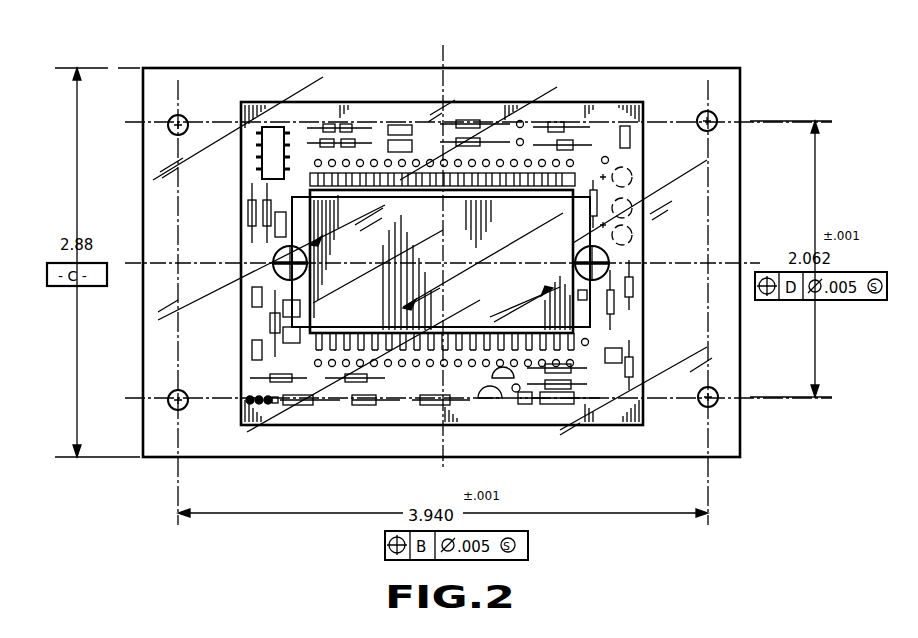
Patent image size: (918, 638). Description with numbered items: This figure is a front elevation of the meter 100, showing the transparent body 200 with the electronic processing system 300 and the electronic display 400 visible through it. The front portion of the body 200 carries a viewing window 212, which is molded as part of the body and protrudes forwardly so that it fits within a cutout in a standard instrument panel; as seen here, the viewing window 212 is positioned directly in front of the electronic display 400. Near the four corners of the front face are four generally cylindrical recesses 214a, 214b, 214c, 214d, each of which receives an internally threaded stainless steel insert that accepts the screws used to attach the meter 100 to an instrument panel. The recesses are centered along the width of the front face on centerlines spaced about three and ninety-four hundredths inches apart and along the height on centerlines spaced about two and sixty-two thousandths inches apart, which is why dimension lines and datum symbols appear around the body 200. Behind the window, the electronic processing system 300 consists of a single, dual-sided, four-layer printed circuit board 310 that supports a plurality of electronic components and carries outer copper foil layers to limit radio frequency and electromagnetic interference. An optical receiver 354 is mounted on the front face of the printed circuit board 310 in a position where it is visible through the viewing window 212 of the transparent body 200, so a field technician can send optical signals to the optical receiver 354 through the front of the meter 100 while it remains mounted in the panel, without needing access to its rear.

The meter 100 is at (52, 158).
The transparent body 200 is at (740, 150).
The viewing window 212 is at (593, 318).
The generally cylindrical recess 214a is at (170, 117).
The generally cylindrical recess 214b is at (168, 400).
The generally cylindrical recess 214c is at (712, 408).
The generally cylindrical recess 214d is at (712, 113).
The electronic processing system 300 is at (603, 100).
The printed circuit board 310 is at (333, 102).
The optical receiver 354 is at (610, 257).
The electronic display 400 is at (583, 335).